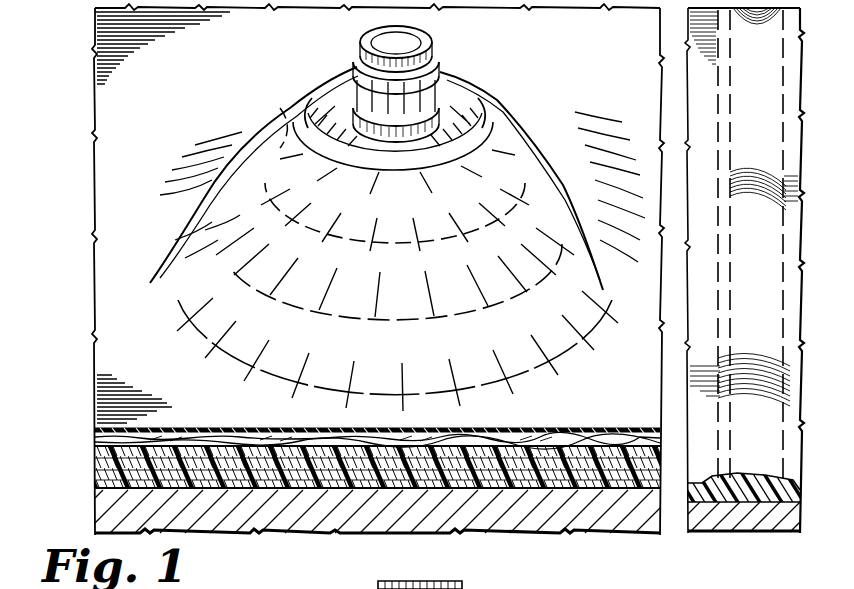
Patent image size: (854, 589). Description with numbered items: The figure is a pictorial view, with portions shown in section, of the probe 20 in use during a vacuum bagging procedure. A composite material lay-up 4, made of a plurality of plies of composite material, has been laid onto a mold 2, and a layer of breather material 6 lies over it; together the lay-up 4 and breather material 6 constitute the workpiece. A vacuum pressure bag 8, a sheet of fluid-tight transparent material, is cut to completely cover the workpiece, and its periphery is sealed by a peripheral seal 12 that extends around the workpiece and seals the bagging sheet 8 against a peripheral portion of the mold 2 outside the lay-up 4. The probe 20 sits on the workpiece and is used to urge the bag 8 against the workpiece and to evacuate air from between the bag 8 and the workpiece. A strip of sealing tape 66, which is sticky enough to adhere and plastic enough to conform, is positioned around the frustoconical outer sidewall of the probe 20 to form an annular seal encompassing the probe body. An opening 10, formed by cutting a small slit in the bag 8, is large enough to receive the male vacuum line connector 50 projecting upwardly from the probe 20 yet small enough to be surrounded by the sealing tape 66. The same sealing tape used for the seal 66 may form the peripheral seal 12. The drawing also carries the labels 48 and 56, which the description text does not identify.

The mold 2 is at (247, 532).
The composite material lay-up 4 is at (92, 448).
The layer of breather material 6 is at (95, 438).
The vacuum pressure bag 8 is at (208, 93).
The opening 10 is at (352, 108).
The peripheral seal 12 is at (750, 504).
The probe 20 is at (180, 280).
The insert element 48 is at (435, 582).
The male vacuum line connector 50 is at (440, 57).
The hatched strip element 56 is at (412, 580).
The sealing tape 66 is at (570, 152).